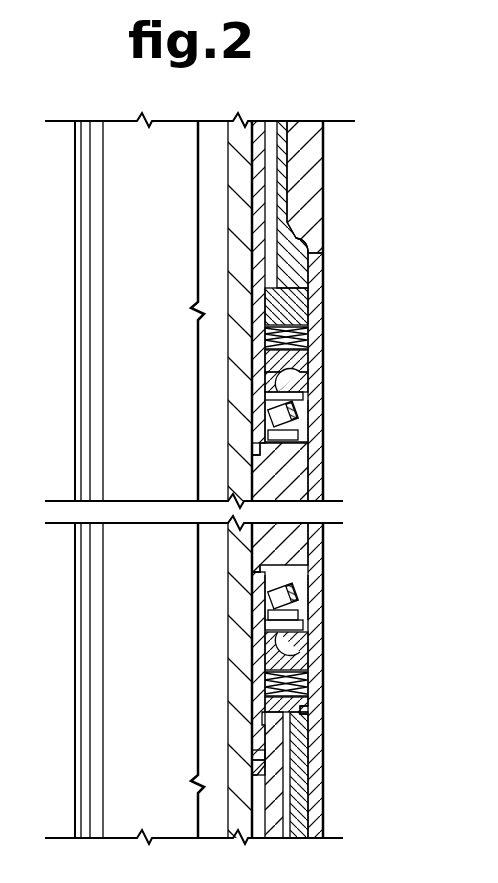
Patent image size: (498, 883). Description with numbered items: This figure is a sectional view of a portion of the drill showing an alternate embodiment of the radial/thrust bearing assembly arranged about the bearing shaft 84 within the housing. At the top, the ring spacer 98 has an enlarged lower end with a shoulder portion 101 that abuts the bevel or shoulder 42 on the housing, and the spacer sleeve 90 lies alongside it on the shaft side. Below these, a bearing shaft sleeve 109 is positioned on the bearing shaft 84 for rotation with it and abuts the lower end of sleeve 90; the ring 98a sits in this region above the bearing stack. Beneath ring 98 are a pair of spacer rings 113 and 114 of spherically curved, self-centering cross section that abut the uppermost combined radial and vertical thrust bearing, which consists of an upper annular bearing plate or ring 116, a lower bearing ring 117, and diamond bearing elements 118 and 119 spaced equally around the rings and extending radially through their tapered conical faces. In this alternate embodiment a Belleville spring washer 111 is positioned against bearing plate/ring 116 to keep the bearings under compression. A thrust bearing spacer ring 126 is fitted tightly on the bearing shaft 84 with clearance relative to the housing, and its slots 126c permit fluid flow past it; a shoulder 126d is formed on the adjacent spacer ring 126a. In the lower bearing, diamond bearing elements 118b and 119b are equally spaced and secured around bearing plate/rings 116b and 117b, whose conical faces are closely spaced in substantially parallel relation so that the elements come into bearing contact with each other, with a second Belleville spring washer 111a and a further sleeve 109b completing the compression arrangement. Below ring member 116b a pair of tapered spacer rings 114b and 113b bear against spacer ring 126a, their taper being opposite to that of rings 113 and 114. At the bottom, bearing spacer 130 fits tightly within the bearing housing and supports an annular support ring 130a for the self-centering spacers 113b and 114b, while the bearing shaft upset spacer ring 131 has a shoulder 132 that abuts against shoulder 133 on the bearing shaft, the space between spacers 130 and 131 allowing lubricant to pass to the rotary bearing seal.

The bevel or shoulder 42 is at (305, 226).
The bearing shaft 84 is at (240, 291).
The spacer sleeve 90 is at (253, 208).
The ring spacer 98 is at (285, 162).
The retaining ring 98a is at (292, 308).
The shoulder portion 101 is at (302, 252).
The bearing shaft sleeve 109 is at (266, 345).
The Belleville spring washer 111 is at (300, 355).
The spacer ring 113 is at (292, 378).
The spacer ring 114 is at (268, 392).
The upper annular bearing plate or ring 116 is at (295, 403).
The lower bearing ring 117 is at (270, 438).
The diamond bearing element 118 is at (290, 420).
The diamond bearing element 119 is at (275, 416).
The thrust bearing spacer ring 126 is at (290, 485).
The spacer ring 126a is at (300, 543).
The slots 126c is at (300, 447).
The shoulder 126d is at (300, 570).
The spring 109b is at (268, 685).
The Belleville spring washer 111a is at (300, 700).
The spacer ring 113b is at (290, 662).
The spacer ring 114b is at (268, 627).
The bearing plate/ring 116b is at (270, 582).
The bearing plate/ring 117b is at (290, 620).
The diamond bearing element 118b is at (272, 604).
The diamond bearing element 119b is at (293, 612).
The bearing spacer 130 is at (283, 790).
The annular support ring 130a is at (305, 708).
The bearing shaft upset spacer ring 131 is at (300, 762).
The shoulder 132 is at (255, 775).
The shoulder 133 is at (258, 760).